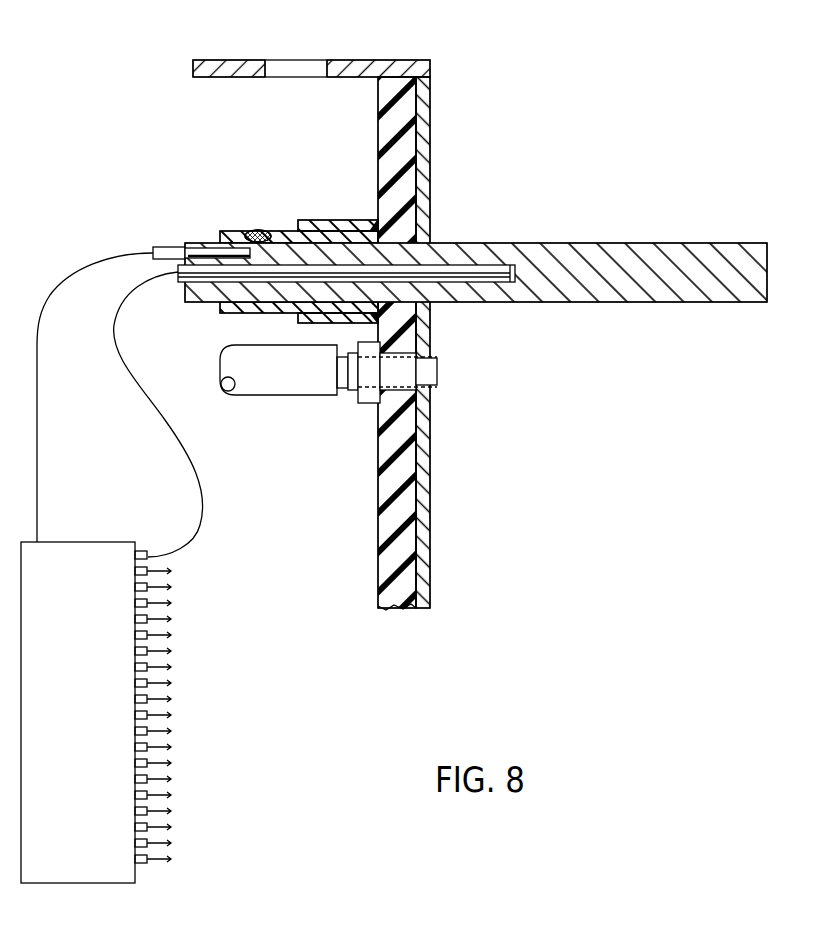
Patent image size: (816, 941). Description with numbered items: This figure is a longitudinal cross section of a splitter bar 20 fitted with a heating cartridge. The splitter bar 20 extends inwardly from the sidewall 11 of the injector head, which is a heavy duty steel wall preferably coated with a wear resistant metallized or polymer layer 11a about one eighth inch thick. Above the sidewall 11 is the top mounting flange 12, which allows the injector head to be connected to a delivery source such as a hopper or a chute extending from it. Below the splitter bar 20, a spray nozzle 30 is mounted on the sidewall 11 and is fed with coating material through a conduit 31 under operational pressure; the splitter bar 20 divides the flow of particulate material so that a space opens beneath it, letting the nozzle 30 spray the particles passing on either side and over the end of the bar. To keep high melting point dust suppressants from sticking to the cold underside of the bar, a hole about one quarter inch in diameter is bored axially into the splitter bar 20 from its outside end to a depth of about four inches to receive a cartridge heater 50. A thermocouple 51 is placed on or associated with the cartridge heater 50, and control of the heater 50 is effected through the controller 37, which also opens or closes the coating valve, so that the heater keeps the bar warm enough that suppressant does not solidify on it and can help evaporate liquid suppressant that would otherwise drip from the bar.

The top mounting flange 12 is at (233, 65).
The sidewall 11 is at (390, 143).
The wall outer layer 11a is at (424, 131).
The splitter bar 20 is at (570, 243).
The cartridge heater 50 is at (462, 268).
The thermocouple 51 is at (165, 247).
The conduit 31 is at (293, 390).
The spray nozzle 30 is at (427, 378).
The controller 37 is at (88, 542).